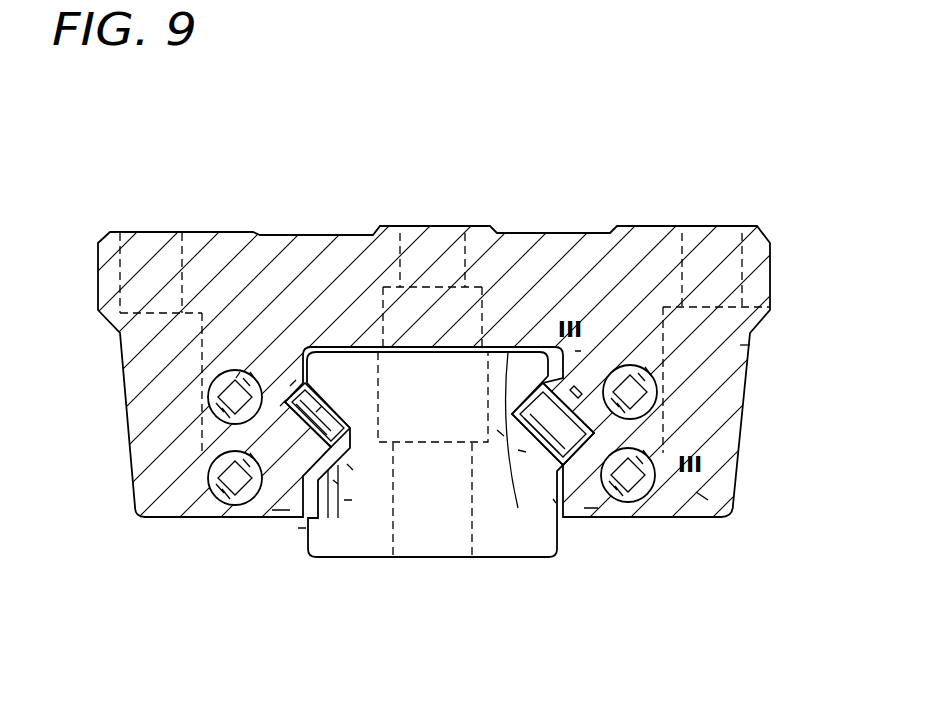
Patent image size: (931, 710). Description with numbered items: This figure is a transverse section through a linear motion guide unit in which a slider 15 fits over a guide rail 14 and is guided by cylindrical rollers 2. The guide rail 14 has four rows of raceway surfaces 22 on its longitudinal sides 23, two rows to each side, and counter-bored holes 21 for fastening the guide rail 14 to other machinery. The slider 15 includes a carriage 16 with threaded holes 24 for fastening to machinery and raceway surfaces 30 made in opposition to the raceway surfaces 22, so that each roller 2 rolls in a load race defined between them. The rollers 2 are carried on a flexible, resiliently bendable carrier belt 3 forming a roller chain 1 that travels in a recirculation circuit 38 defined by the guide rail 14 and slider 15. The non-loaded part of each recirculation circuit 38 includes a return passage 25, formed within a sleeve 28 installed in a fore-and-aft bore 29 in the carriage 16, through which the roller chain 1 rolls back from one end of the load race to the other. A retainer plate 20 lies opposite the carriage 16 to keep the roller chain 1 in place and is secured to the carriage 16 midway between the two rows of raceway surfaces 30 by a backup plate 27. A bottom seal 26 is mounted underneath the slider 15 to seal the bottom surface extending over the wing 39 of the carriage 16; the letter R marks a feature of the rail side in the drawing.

The roller chain 1 is at (333, 377).
The roller 2 is at (235, 370).
The carrier belt 3 is at (320, 368).
The guide rail 14 is at (495, 530).
The slider 15 is at (503, 222).
The carriage 16 is at (560, 255).
The retainer plate 20 is at (528, 462).
The counter-bored hole 21 is at (412, 560).
The raceway surface 22 is at (578, 352).
The longitudinal side 23 is at (302, 530).
The threaded hole 24 is at (135, 235).
The return passage 25 is at (745, 347).
The bottom seal 26 is at (280, 510).
The backup plate 27 is at (500, 433).
The sleeve 28 is at (208, 382).
The bore 29 is at (657, 398).
The raceway surface 30 is at (283, 407).
The recirculation circuit 38 is at (287, 407).
The wing 39 is at (703, 493).
The rail side surface R is at (552, 500).